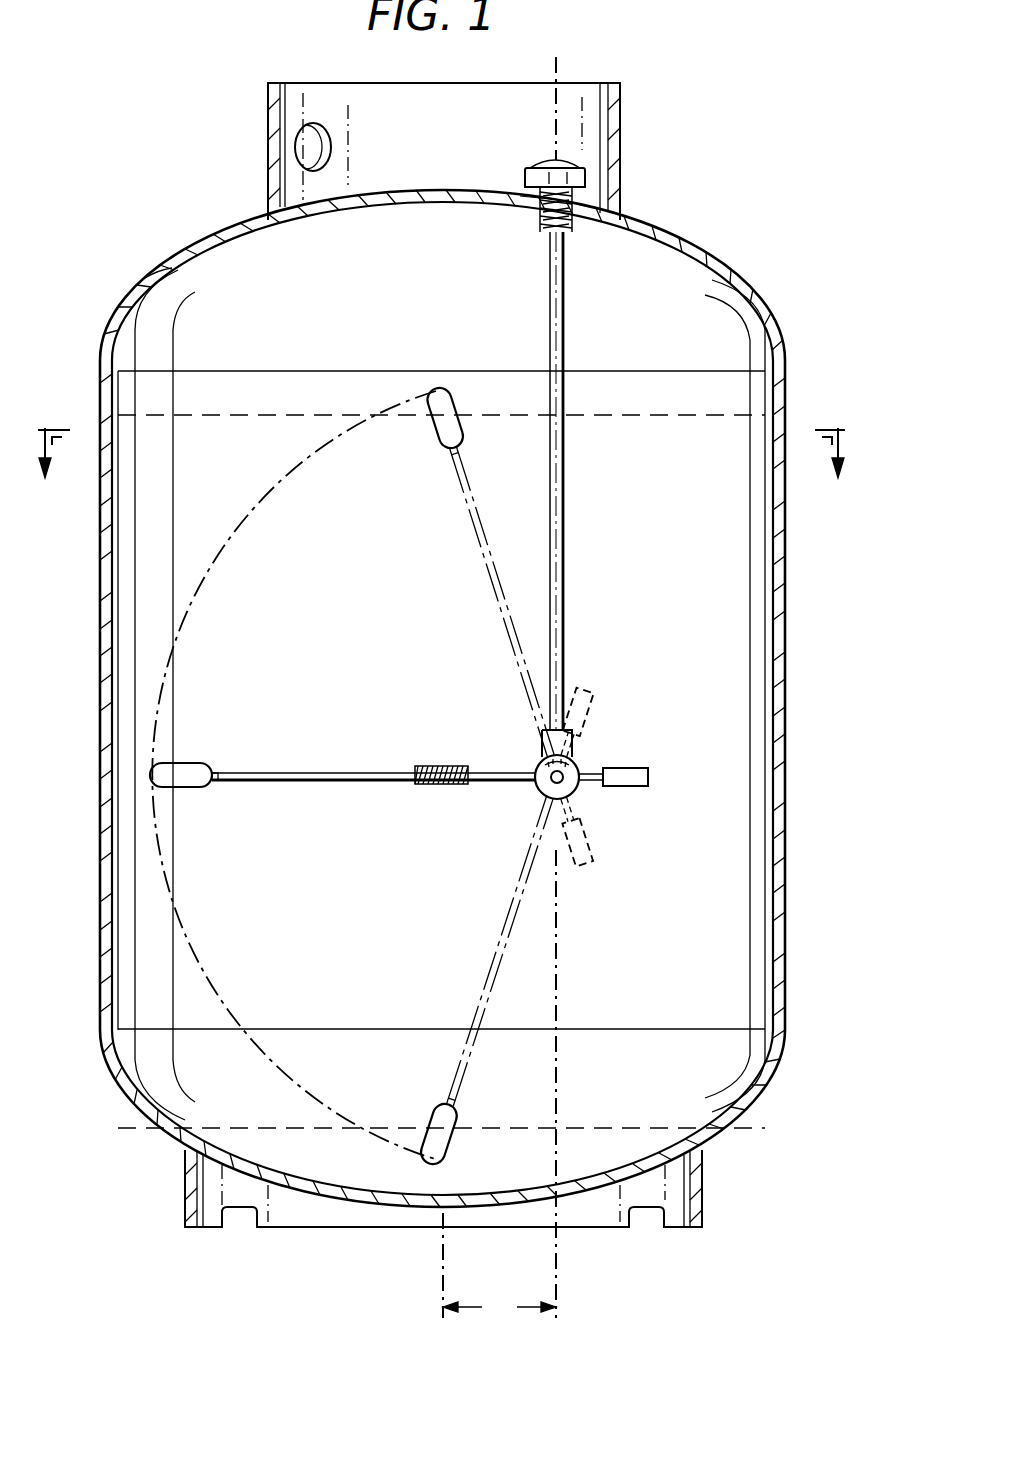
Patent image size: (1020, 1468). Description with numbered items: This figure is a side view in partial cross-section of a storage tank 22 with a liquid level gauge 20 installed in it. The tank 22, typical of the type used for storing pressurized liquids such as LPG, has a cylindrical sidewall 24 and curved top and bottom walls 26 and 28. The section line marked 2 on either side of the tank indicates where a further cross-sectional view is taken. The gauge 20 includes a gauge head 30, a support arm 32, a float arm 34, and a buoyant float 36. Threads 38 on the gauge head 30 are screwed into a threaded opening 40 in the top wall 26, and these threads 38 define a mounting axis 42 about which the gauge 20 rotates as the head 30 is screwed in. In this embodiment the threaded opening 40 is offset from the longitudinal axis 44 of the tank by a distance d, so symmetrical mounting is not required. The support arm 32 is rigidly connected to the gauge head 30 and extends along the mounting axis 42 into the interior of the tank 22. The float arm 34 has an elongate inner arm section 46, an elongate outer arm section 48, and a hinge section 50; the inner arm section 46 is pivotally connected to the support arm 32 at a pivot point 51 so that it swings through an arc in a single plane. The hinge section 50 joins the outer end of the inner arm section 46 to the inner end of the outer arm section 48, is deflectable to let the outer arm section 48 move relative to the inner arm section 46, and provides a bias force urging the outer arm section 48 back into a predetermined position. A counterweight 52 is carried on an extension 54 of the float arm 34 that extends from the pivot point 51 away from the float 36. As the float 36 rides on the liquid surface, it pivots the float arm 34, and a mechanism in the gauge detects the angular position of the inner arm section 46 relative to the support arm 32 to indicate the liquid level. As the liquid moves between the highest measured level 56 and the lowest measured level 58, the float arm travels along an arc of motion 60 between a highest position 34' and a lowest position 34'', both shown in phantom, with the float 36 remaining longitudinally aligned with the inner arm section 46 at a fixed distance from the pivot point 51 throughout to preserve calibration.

The section line 2- 2 is at (442, 435).
The liquid level gauge 20 is at (410, 676).
The storage tank 22 is at (495, 655).
The cylindrical sidewall 24 is at (790, 812).
The curved top wall 26 is at (190, 250).
The curved bottom wall 28 is at (378, 1190).
The gauge head 30 is at (538, 229).
The support arm 32 is at (565, 506).
The float arm 34 is at (410, 766).
The highest position of float arm 34' is at (481, 626).
The lowest position of float arm 34'' is at (469, 926).
The buoyant float 36 is at (198, 762).
The threads 38 is at (573, 237).
The threaded opening 40 is at (548, 166).
The mounting axis 42 is at (560, 62).
The longitudinal axis 44 is at (440, 1290).
The inner arm section 46 is at (500, 770).
The outer arm section 48 is at (318, 787).
The hinge section 50 is at (438, 789).
The pivot point 51 is at (549, 780).
The counterweight 52 is at (628, 790).
The extension 54 is at (591, 768).
The highest measured level 56 is at (296, 406).
The lowest measured level 58 is at (262, 1130).
The arc of motion 60 is at (262, 505).